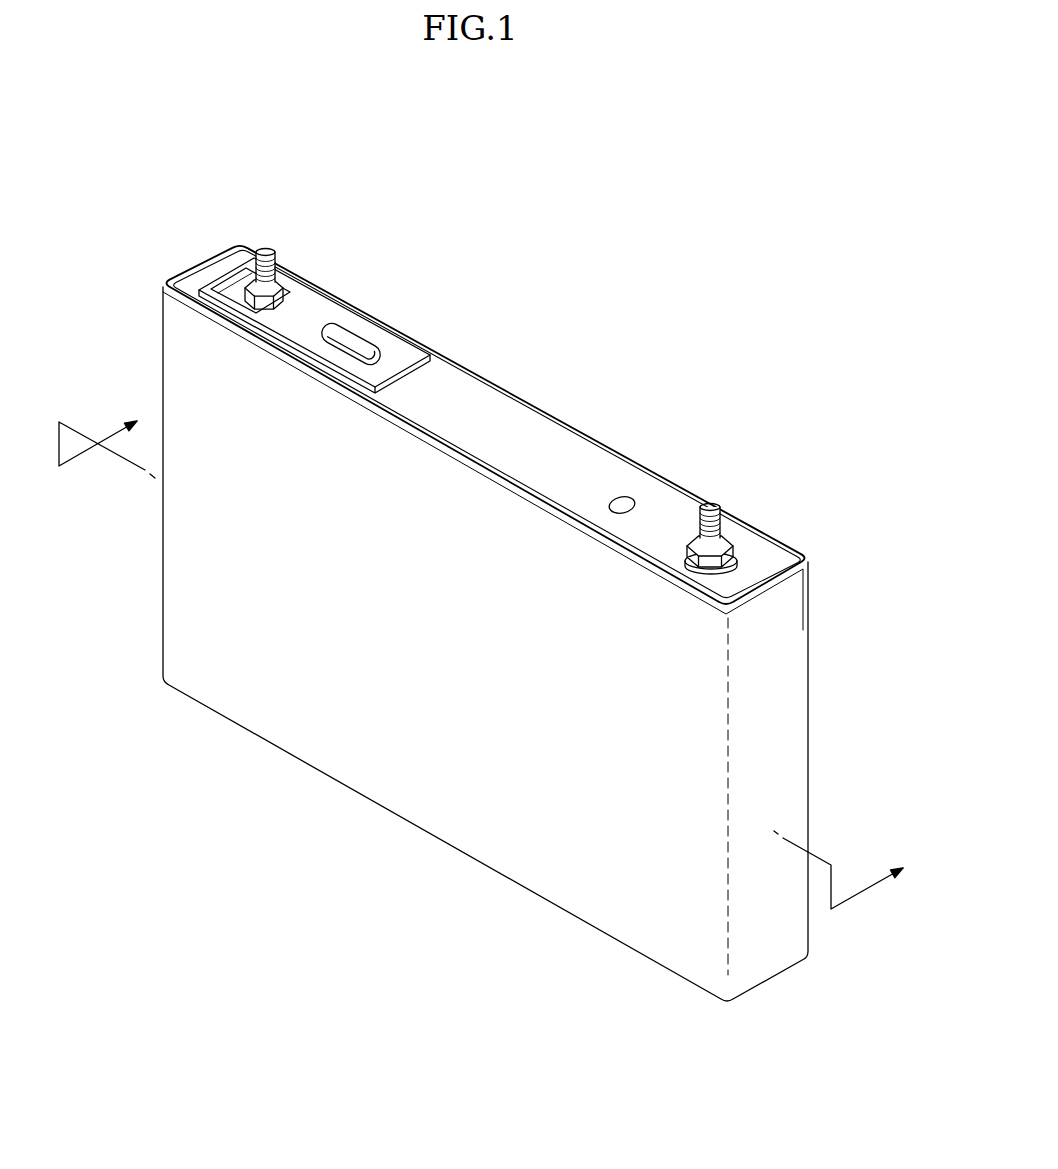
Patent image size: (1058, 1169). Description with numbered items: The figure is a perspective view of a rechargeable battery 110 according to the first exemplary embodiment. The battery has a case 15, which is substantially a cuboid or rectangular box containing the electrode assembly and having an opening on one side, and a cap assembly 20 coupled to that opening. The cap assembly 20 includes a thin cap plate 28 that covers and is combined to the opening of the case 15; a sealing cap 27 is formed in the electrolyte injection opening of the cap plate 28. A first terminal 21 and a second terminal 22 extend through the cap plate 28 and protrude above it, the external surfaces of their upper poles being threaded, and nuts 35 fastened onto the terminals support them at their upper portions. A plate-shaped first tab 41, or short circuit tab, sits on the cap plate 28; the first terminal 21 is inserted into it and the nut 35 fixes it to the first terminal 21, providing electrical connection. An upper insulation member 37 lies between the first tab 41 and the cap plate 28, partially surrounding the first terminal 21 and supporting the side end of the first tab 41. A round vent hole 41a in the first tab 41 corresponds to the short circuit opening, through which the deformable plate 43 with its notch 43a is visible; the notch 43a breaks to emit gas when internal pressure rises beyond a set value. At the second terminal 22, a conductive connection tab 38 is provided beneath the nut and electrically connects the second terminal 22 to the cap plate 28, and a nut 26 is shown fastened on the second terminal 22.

The rechargeable battery 110 is at (604, 372).
The case 15 is at (435, 812).
The cap assembly 20 is at (450, 353).
The cap plate 28 is at (493, 403).
The sealing cap 27 is at (631, 498).
The first terminal 21 is at (265, 249).
The second terminal 22 is at (712, 507).
The nut 26 is at (725, 536).
The connection tab 38 is at (735, 560).
The nut 35 is at (228, 287).
The upper insulation member 37 is at (240, 267).
The first tab 41 is at (296, 294).
The vent hole 41a is at (388, 358).
The deformable plate 43 is at (352, 340).
The notch 43a is at (375, 350).